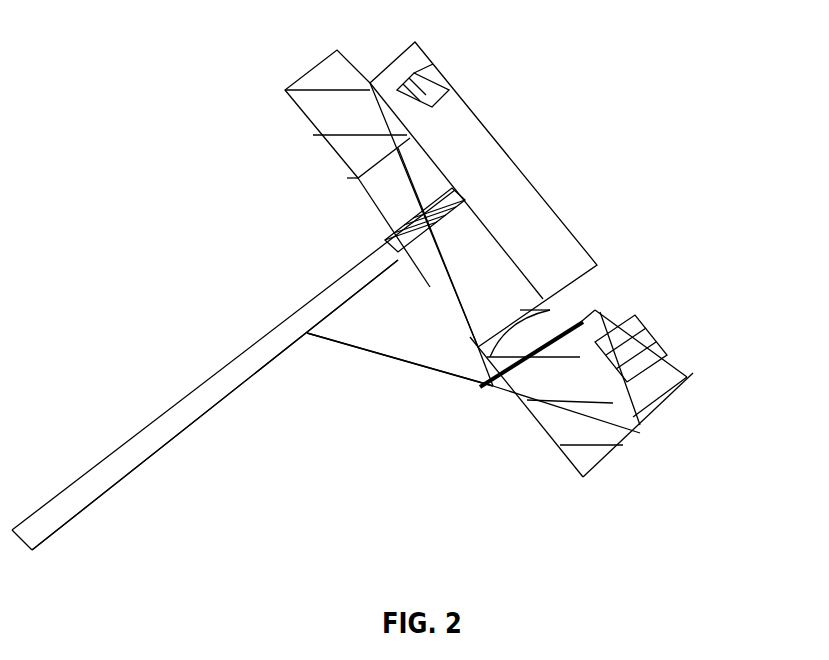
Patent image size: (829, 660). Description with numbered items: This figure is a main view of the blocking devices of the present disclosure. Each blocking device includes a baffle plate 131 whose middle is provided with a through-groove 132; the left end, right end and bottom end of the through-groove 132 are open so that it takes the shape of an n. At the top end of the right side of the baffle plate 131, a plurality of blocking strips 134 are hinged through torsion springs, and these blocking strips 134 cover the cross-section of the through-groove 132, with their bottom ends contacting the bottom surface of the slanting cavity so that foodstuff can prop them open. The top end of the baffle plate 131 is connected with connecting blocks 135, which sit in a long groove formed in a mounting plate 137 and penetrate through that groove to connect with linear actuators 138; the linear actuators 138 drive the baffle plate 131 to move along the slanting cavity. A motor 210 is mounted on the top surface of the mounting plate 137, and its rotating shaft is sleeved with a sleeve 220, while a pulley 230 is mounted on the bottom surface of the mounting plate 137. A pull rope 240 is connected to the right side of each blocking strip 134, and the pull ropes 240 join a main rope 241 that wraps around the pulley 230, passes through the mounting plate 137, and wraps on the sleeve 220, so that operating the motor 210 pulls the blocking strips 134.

The baffle plate 131 is at (385, 243).
The through-groove 132 is at (247, 355).
The blocking strips 134 is at (267, 375).
The connecting blocks 135 is at (458, 187).
The mounting plate 137 is at (605, 430).
The linear actuators 138 is at (515, 197).
The motor 210 is at (667, 363).
The sleeve 220 is at (603, 306).
The pulley 230 is at (497, 392).
The pull rope 240 is at (380, 353).
The main rope 241 is at (460, 398).